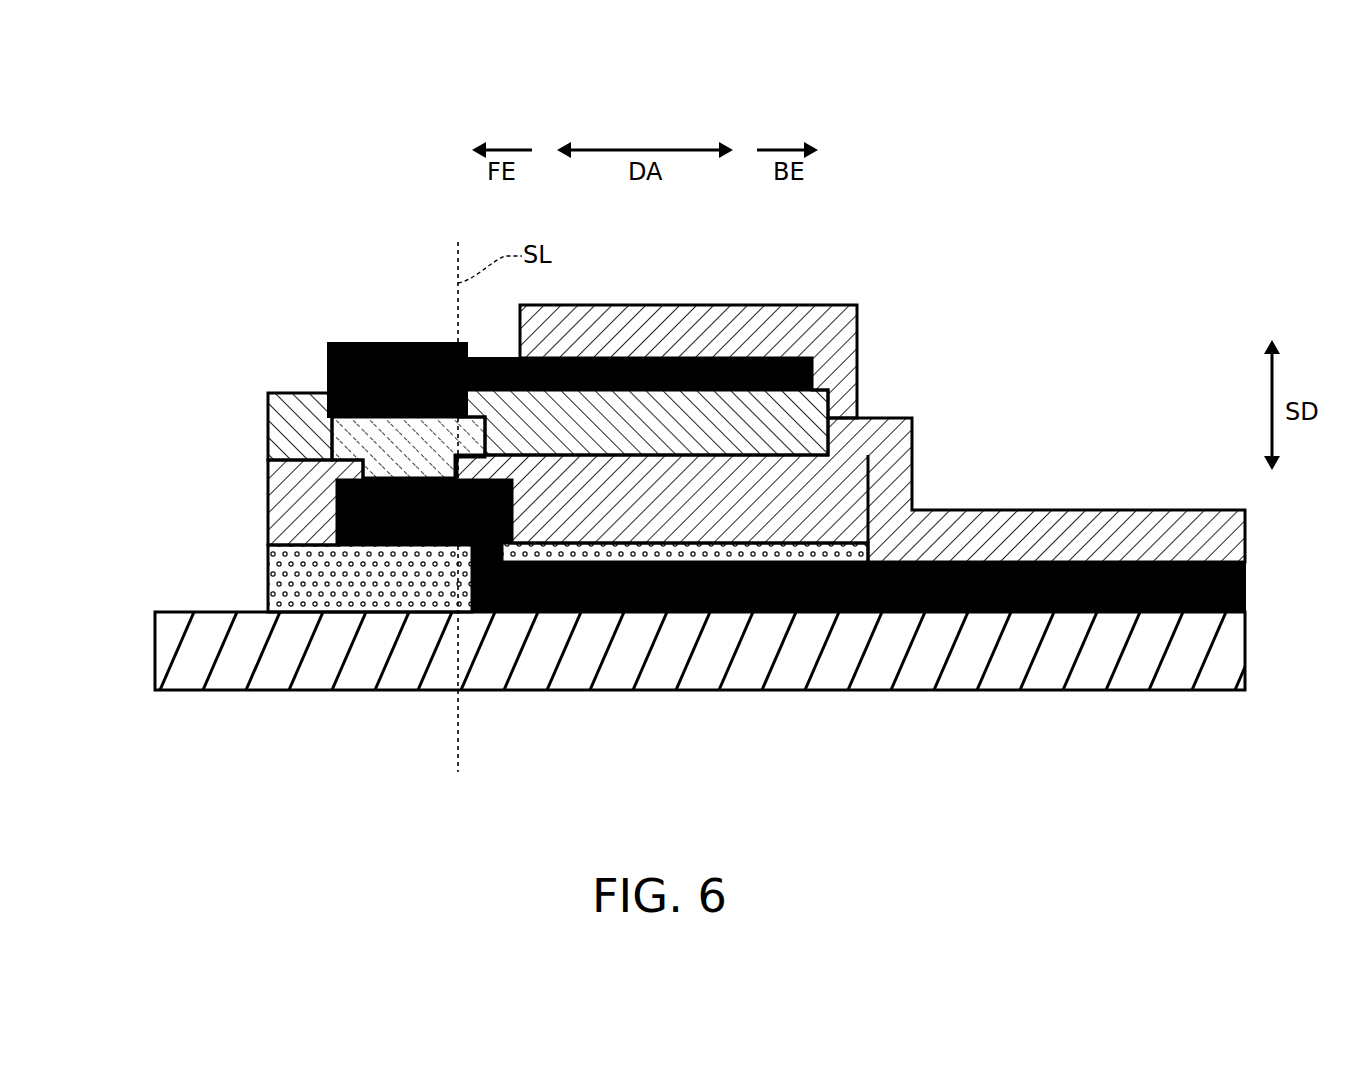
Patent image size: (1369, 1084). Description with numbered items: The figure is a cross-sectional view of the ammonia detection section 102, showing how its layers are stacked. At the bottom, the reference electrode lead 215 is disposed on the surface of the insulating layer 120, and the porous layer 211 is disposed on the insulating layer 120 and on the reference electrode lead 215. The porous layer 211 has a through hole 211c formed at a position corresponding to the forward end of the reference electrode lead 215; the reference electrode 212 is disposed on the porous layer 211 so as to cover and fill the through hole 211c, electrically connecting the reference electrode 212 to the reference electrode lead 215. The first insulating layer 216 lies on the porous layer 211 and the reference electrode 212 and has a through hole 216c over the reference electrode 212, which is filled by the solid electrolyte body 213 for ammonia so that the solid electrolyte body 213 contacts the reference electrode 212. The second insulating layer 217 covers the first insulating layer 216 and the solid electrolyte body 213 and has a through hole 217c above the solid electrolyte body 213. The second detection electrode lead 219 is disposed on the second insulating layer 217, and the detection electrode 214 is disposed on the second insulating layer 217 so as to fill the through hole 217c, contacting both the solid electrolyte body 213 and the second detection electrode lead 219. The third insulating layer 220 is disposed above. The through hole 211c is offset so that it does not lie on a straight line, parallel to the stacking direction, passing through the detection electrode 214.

The ammonia detection section 102 is at (706, 388).
The insulating layer 120 is at (1212, 655).
The porous layer 211 is at (317, 585).
The through hole 211c is at (483, 553).
The reference electrode 212 is at (340, 505).
The solid electrolyte body for ammonia 213 is at (270, 413).
The detection electrode 214 is at (397, 343).
The reference electrode lead 215 is at (1245, 587).
The first insulating layer 216 is at (308, 487).
The through hole 216c is at (392, 472).
The second insulating layer 217 is at (322, 394).
The through hole 217c is at (405, 405).
The second detection electrode lead 219 is at (812, 380).
The third insulating layer 220 is at (695, 312).